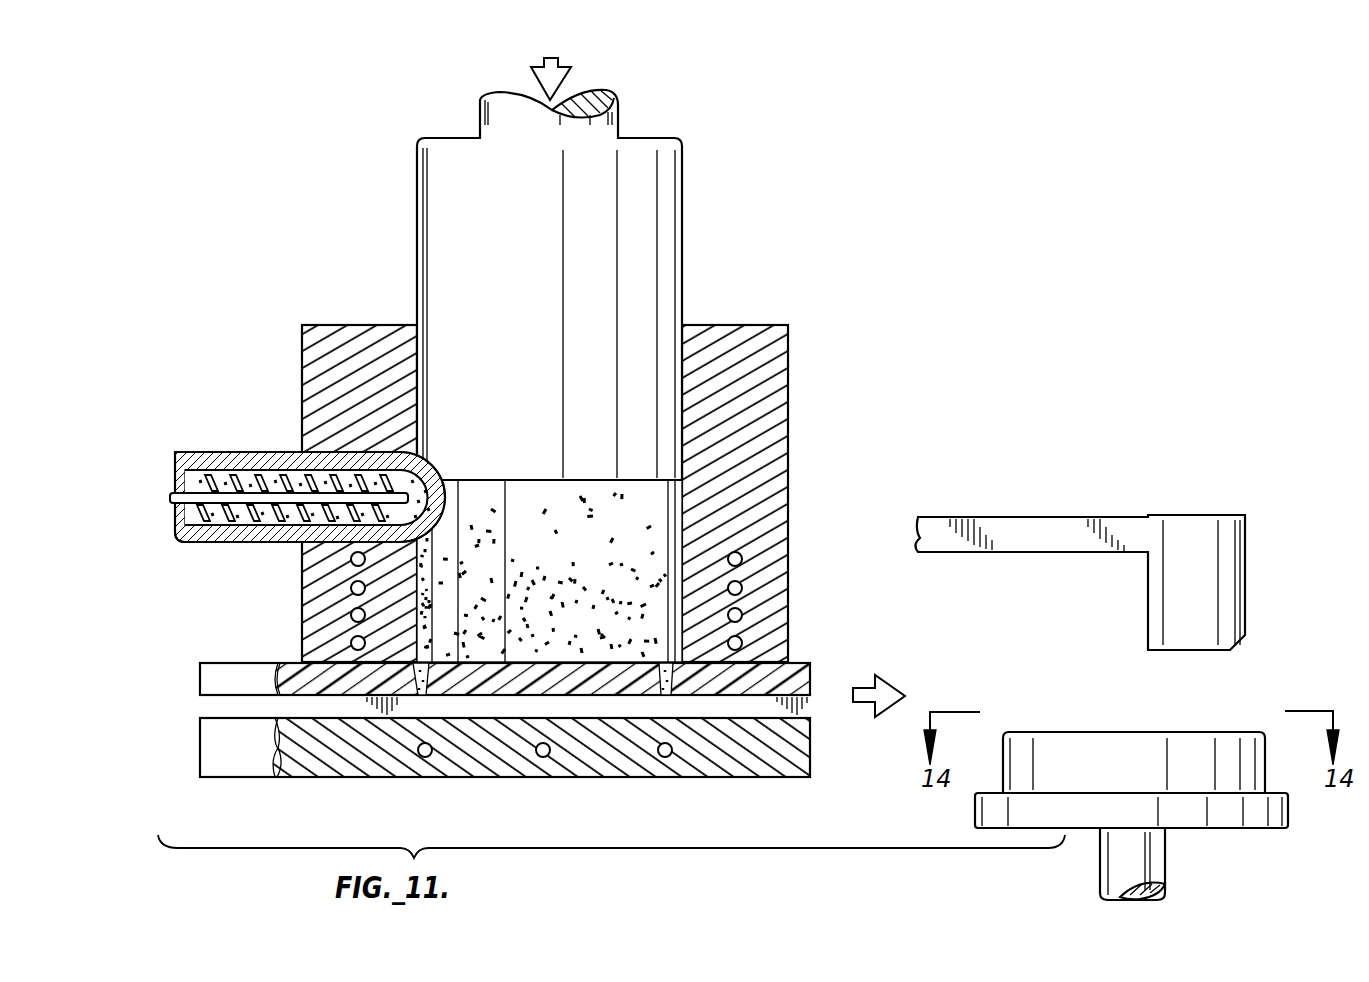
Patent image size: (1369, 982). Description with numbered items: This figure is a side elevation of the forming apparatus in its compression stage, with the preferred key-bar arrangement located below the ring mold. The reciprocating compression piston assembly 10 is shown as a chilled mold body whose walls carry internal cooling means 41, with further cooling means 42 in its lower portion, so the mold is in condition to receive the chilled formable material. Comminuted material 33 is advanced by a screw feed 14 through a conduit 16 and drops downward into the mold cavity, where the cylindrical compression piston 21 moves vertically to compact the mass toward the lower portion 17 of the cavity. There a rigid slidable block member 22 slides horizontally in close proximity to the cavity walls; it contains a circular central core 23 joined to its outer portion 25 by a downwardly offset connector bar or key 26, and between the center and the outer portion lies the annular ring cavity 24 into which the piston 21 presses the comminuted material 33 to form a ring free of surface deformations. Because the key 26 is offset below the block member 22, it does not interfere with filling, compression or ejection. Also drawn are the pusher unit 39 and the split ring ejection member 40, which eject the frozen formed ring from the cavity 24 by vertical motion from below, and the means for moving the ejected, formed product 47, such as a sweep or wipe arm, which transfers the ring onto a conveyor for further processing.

The reciprocating compression piston assembly 10 is at (305, 341).
The screw feed 14 is at (133, 482).
The conduit 16 is at (268, 454).
The lower portion of the mold cavity 17 is at (470, 660).
The compression piston 21 is at (437, 210).
The slidable block member 22 is at (237, 698).
The central core 23 is at (653, 695).
The annular ring cavity 24 is at (705, 668).
The outer portion 25 is at (790, 658).
The connector bar or key 26 is at (235, 707).
The comminuted material 33 is at (598, 537).
The pusher unit 39 is at (1220, 815).
The split ring ejection member 40 is at (1118, 742).
The internal cooling means 41 is at (743, 645).
The lower portion cooling means 42 is at (665, 757).
The means for moving the ejected, formed product 47 is at (1177, 520).